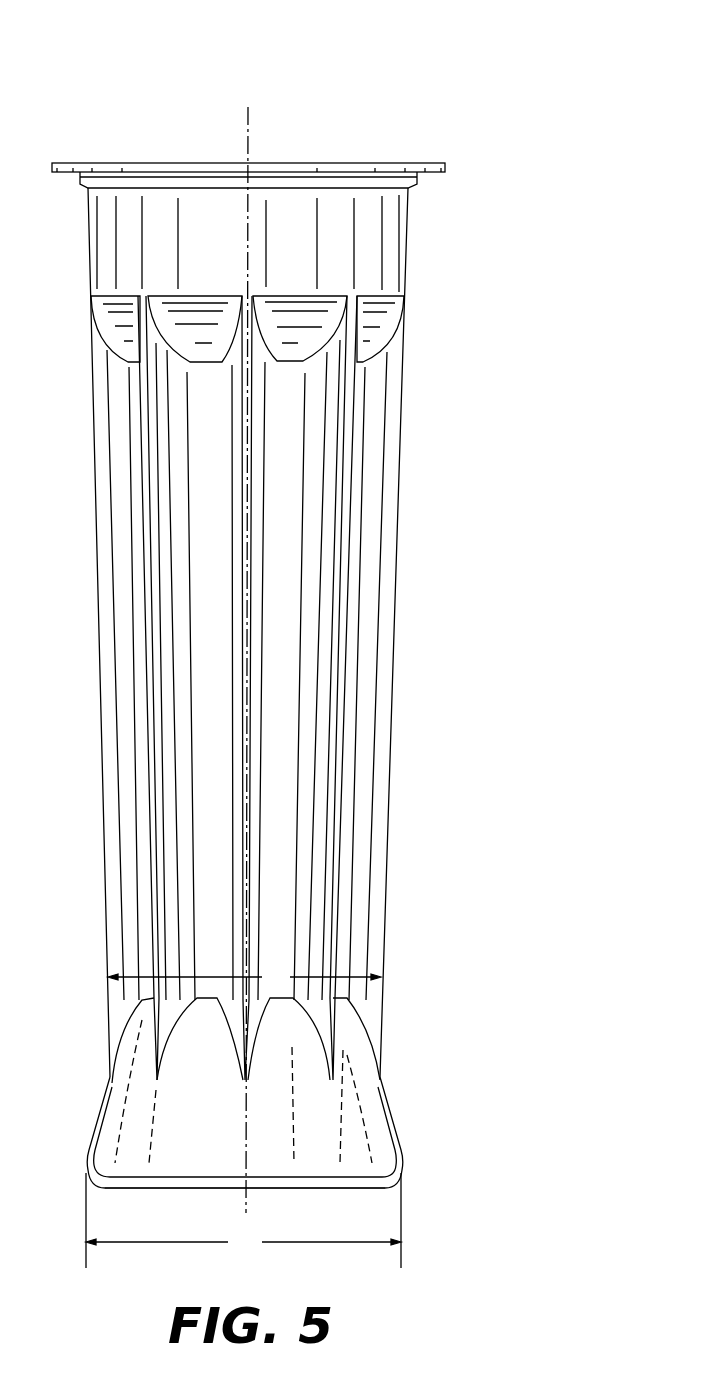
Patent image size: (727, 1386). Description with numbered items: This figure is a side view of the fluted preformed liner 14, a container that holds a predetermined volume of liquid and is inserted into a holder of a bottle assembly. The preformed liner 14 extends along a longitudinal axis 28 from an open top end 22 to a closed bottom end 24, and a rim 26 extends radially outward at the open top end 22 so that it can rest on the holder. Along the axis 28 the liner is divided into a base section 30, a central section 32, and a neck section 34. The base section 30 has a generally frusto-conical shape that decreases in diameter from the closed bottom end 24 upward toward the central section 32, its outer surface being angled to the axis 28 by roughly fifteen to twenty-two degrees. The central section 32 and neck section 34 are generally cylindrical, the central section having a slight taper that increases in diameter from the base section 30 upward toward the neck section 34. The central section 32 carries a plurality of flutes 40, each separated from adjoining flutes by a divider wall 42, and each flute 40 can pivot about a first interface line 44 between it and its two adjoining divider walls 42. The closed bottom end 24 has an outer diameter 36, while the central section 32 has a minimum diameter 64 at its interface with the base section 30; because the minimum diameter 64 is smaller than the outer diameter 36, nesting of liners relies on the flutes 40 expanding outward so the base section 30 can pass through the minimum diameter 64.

The preformed liner 14 is at (457, 100).
The open top end 22 is at (107, 162).
The closed bottom end 24 is at (293, 1192).
The rim 26 is at (447, 170).
The longitudinal axis 28 is at (247, 121).
The base section 30 is at (412, 1146).
The central section 32 is at (329, 634).
The neck section 34 is at (420, 260).
The outer diameter 36 is at (243, 1220).
The flute 40 is at (373, 497).
The divider wall 42 is at (345, 660).
The first interface line 44 is at (297, 1030).
The minimum diameter 64 is at (244, 977).